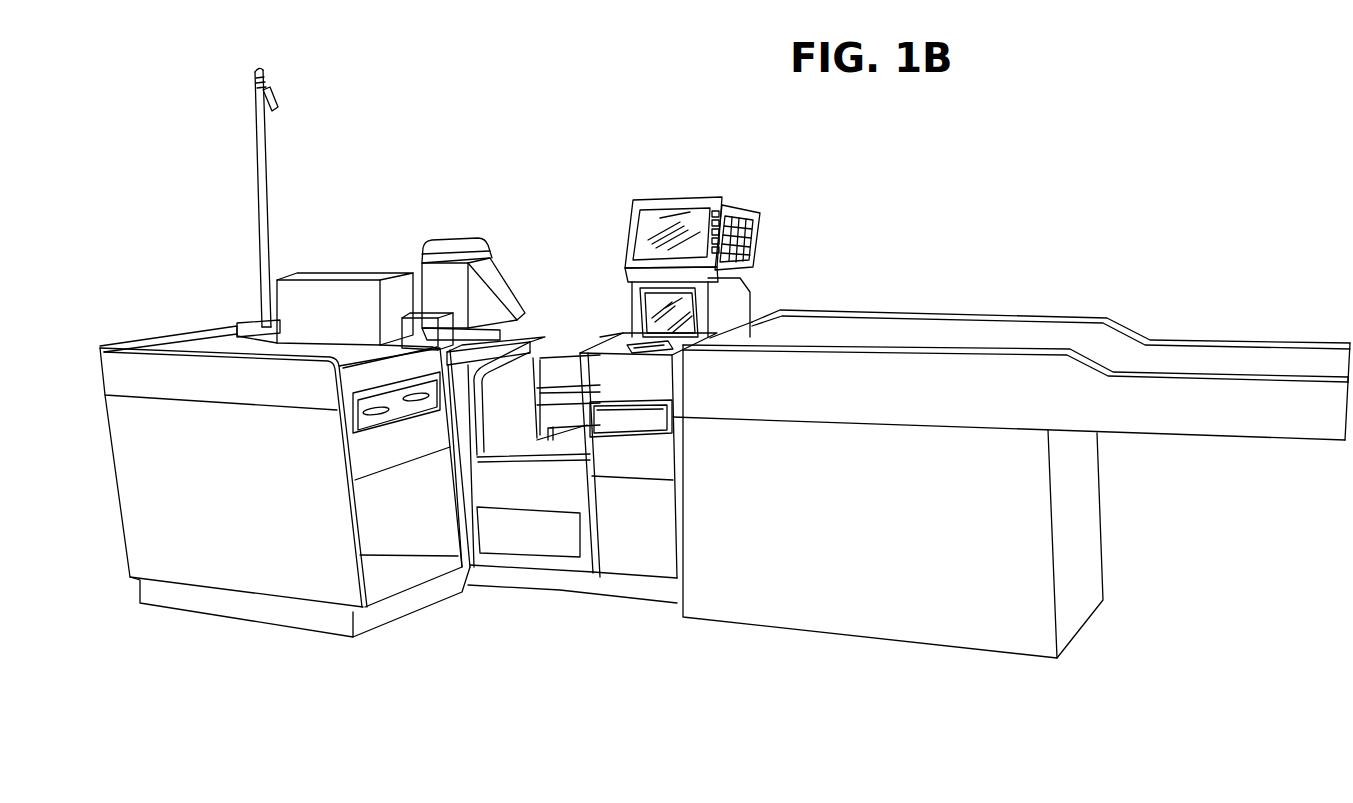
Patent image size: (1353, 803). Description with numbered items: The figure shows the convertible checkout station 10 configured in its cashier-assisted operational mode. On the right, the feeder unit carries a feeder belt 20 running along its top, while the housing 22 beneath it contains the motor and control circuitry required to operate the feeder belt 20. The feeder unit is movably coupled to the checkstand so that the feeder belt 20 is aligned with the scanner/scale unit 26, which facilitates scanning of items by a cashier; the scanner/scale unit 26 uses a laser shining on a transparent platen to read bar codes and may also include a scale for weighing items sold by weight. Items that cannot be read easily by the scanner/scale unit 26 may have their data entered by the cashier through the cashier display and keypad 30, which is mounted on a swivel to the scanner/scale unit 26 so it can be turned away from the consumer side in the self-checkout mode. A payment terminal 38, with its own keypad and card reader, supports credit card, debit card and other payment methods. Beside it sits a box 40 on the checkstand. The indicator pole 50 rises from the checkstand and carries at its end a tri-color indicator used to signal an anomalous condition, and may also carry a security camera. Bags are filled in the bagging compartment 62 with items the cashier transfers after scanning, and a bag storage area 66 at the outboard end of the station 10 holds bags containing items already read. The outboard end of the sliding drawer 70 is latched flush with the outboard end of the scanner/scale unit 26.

The convertible checkout station 10 is at (1097, 690).
The feeder belt 20 is at (1210, 362).
The housing 22 is at (1080, 515).
The scanner/scale unit 26 is at (620, 347).
The cashier display and keypad 30 is at (683, 197).
The payment terminal 38 is at (460, 240).
The bag scale box 40 is at (352, 276).
The indicator pole 50 is at (257, 164).
The bagging compartment 62 is at (500, 433).
The bag storage area 66 is at (232, 350).
The sliding drawer 70 is at (618, 417).